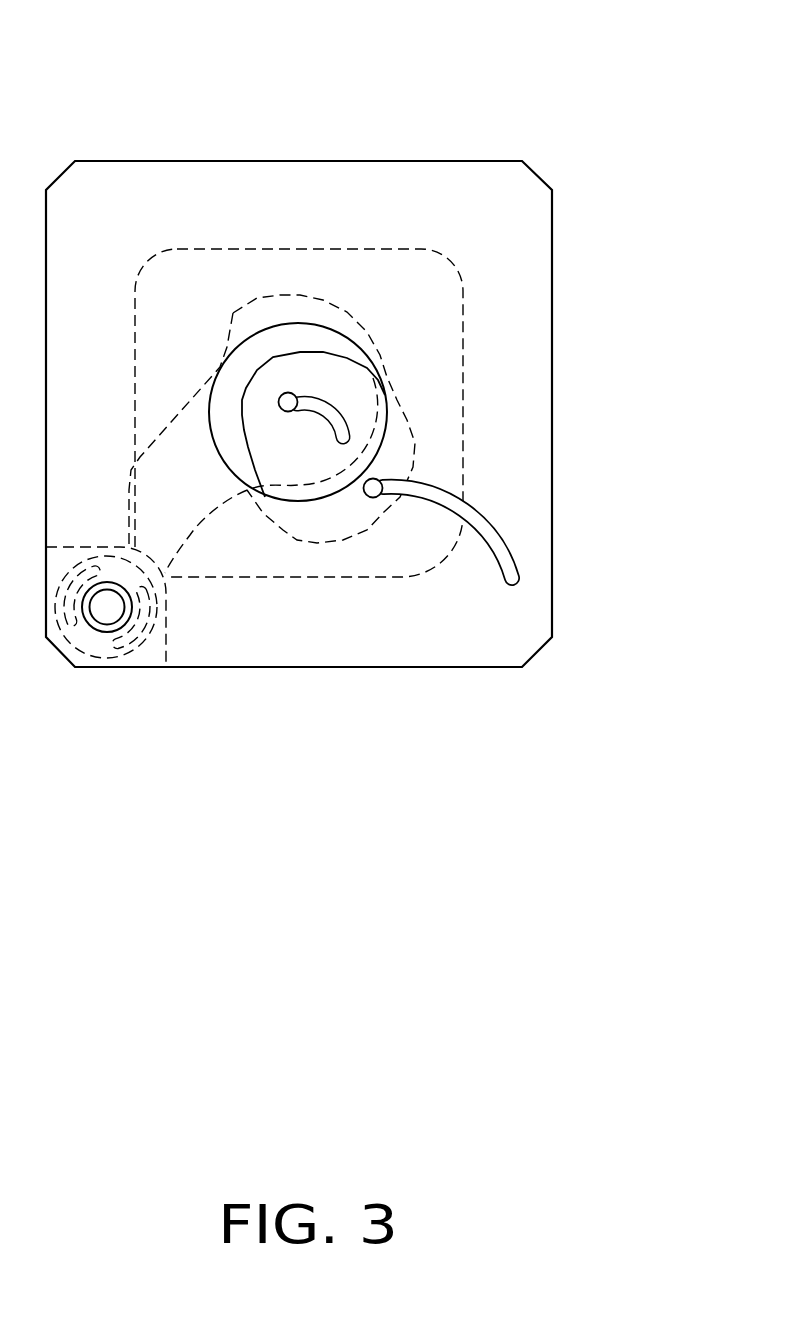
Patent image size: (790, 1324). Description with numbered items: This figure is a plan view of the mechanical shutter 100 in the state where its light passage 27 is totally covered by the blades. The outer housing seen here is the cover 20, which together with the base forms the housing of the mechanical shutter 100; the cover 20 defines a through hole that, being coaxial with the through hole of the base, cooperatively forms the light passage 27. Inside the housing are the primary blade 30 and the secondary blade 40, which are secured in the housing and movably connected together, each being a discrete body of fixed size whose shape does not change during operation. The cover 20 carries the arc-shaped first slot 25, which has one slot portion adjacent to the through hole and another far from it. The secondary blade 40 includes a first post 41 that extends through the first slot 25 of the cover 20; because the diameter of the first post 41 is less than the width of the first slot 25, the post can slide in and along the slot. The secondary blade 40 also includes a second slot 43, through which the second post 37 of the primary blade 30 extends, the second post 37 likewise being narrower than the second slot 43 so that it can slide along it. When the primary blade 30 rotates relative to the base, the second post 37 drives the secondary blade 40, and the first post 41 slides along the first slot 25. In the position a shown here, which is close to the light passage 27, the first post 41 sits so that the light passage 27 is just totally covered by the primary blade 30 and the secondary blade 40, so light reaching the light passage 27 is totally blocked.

The mechanical shutter 100 is at (357, 388).
The cover 20 is at (513, 290).
The first slot 25 is at (507, 560).
The light passage 27 is at (305, 325).
The primary blade 30 is at (257, 298).
The second post 37 is at (293, 395).
The secondary blade 40 is at (265, 497).
The first post 41 is at (378, 497).
The second slot 43 is at (343, 430).